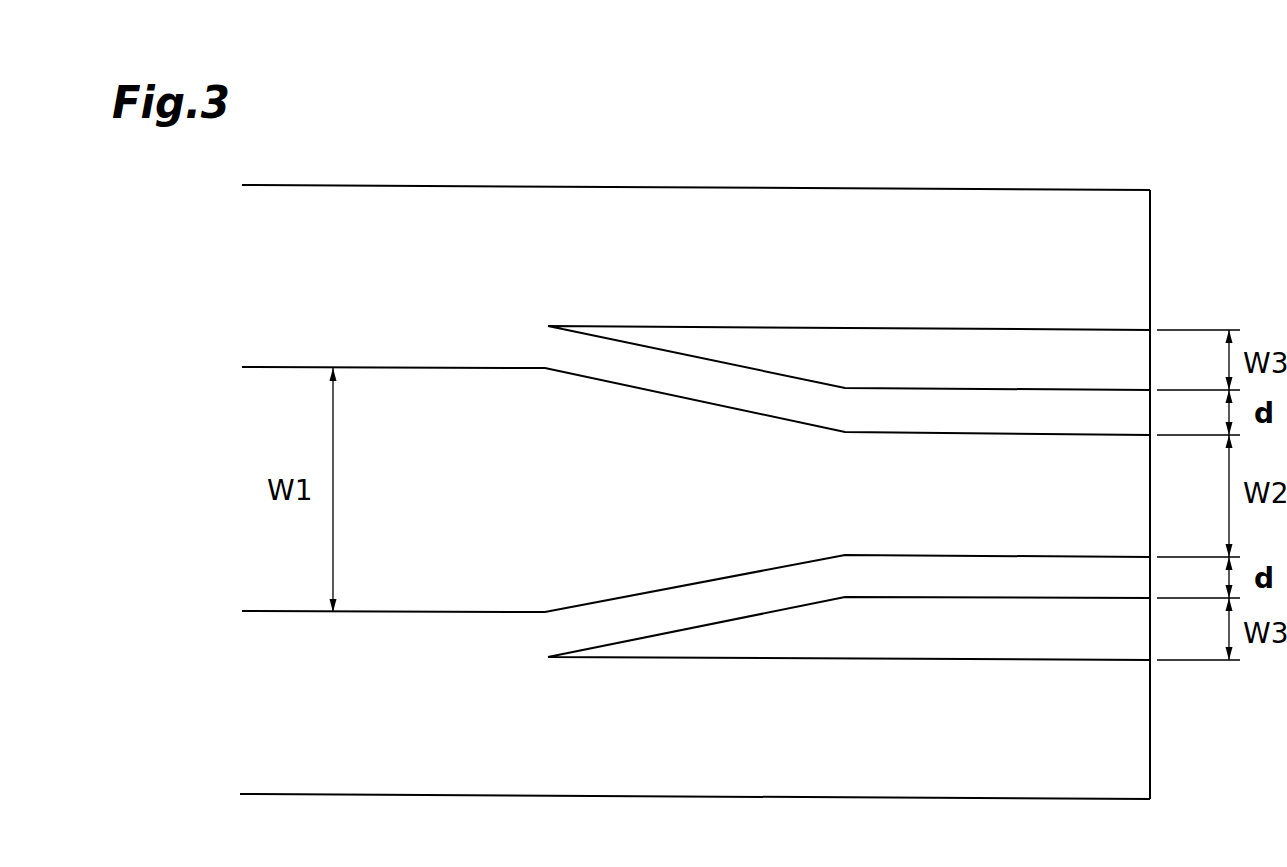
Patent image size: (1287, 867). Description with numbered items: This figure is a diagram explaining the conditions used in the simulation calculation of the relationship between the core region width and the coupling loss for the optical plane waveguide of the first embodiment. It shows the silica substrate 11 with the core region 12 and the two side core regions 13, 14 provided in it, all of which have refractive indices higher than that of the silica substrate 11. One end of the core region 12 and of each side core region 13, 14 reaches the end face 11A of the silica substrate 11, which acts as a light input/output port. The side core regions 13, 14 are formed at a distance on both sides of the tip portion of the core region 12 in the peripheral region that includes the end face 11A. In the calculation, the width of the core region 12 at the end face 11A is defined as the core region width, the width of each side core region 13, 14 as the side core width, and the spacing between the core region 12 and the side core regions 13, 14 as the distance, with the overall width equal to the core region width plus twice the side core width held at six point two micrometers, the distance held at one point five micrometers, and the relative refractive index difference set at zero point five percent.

The silica substrate 11 is at (935, 198).
The end face of the silica substrate 11A is at (1151, 237).
The core region 12 is at (415, 612).
The side core region 13 is at (845, 655).
The side core region 14 is at (845, 332).